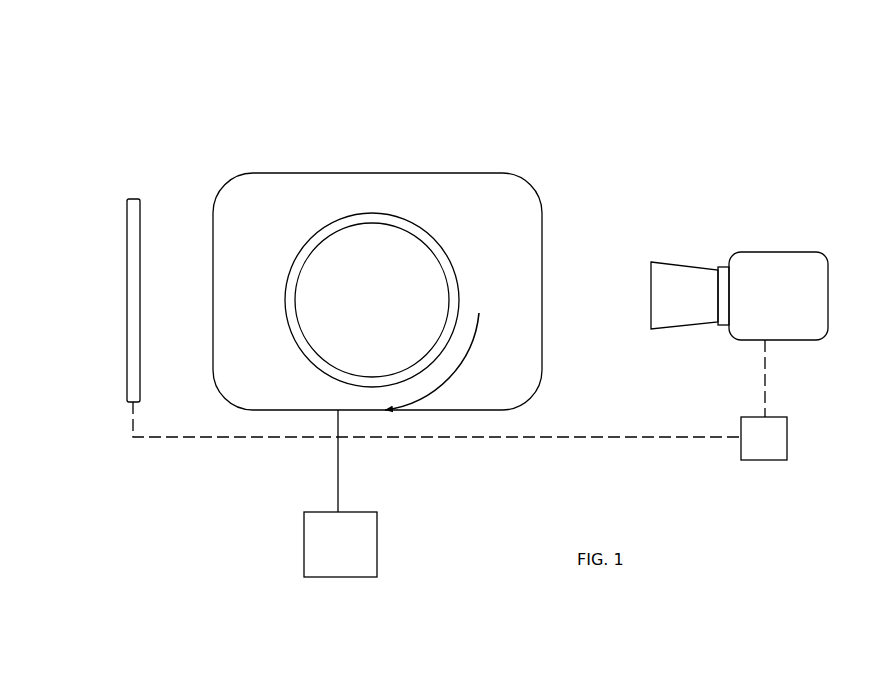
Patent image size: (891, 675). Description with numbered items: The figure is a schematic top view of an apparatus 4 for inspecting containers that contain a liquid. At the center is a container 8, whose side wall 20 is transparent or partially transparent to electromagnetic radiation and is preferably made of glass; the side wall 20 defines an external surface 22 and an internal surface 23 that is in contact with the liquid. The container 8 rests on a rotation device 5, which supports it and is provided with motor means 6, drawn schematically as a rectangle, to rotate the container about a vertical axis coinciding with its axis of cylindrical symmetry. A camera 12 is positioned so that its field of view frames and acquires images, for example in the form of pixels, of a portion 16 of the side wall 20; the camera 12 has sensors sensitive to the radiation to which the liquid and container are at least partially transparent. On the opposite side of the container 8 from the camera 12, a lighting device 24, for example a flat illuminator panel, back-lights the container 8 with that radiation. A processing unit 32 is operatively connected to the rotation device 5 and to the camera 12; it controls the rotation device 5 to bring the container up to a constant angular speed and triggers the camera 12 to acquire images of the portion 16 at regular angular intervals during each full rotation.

The inspection apparatus 4 is at (337, 111).
The rotation device 5 is at (545, 340).
The motor means 6 is at (340, 544).
The container 8 is at (432, 215).
The camera 12 is at (781, 250).
The portion of the side wall 16 is at (472, 284).
The side wall 20 is at (355, 261).
The external surface 22 is at (352, 210).
The internal surface 23 is at (366, 225).
The lighting device 24 is at (135, 196).
The processing unit 32 is at (460, 400).